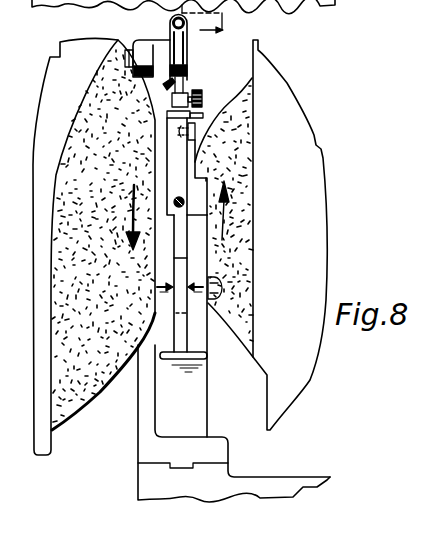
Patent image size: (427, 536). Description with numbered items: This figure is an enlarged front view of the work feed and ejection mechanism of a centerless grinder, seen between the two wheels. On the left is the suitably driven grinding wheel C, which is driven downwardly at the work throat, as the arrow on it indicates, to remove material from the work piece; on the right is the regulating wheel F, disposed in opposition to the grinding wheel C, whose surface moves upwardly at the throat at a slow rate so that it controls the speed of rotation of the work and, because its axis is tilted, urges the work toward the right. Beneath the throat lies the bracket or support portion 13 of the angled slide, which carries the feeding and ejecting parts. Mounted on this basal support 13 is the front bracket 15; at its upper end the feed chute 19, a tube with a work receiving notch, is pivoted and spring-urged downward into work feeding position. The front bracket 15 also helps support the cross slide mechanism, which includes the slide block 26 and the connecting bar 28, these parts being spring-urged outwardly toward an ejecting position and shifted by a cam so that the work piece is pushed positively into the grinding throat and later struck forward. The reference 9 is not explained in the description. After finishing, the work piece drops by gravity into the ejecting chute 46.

The direction of movement arrow 9 is at (206, 31).
The feed chute 19 is at (187, 42).
The front bracket 15 is at (252, 78).
The regulating wheel F is at (232, 127).
The connecting bar 28 is at (197, 148).
The slide block 26 is at (178, 165).
The grinding wheel C is at (128, 258).
The ejecting chute 46 is at (180, 272).
The bracket or support portion 13 is at (193, 428).